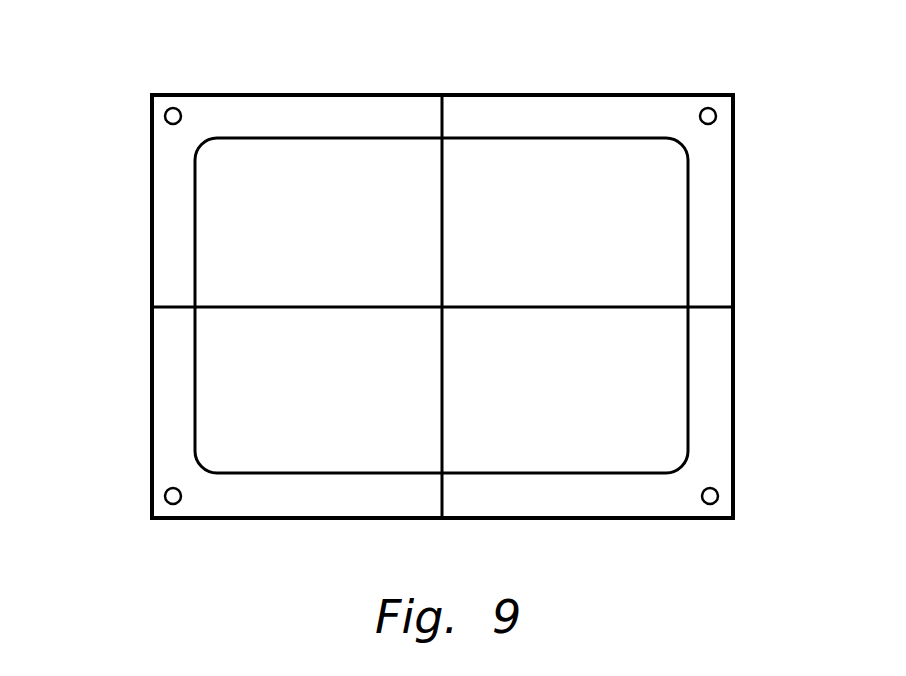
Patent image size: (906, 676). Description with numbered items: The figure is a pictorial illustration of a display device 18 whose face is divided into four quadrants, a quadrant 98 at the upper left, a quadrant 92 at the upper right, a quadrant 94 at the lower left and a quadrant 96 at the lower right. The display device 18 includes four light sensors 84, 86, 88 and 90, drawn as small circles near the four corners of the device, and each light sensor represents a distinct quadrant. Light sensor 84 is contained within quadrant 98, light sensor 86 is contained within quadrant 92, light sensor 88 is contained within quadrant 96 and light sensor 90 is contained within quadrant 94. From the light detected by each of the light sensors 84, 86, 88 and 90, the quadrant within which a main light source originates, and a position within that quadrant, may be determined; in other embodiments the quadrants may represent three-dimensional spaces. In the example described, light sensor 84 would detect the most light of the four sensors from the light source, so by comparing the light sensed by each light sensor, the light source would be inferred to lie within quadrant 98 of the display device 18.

The display device 18 is at (678, 95).
The light sensor 84 is at (165, 116).
The light sensor 86 is at (716, 116).
The light sensor 88 is at (718, 495).
The light sensor 90 is at (165, 496).
The quadrant 92 is at (605, 214).
The quadrant 94 is at (315, 427).
The quadrant 96 is at (605, 427).
The quadrant 98 is at (315, 214).